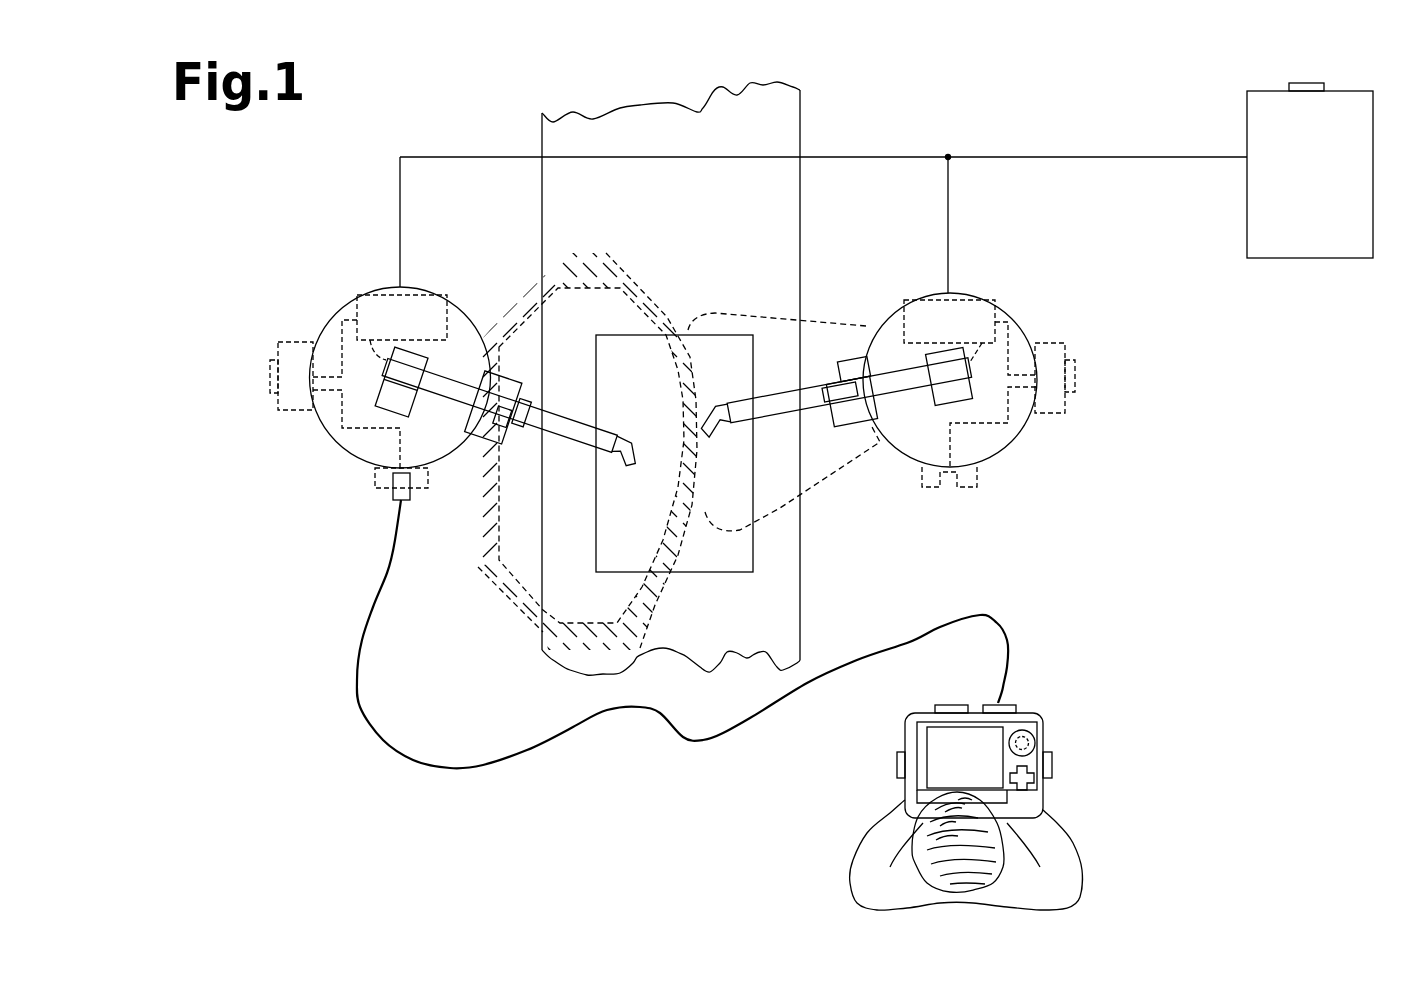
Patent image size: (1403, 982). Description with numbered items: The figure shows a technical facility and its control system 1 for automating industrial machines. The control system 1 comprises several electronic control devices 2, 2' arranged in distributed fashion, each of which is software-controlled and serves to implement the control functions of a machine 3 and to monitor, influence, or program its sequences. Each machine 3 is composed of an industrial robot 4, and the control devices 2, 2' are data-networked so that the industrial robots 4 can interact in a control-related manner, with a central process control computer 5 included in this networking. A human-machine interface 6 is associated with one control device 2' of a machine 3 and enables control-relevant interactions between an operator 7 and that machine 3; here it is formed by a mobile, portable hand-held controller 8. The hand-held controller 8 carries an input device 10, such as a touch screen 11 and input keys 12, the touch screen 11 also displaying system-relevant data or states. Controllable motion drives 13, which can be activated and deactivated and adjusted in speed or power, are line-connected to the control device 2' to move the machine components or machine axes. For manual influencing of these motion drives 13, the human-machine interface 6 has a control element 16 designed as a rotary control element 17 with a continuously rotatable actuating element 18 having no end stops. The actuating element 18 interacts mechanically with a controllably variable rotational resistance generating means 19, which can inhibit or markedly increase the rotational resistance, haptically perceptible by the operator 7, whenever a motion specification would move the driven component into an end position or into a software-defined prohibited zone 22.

The control system 1 is at (297, 217).
The electronic control device 2 is at (974, 721).
The electronic control device 2' is at (644, 284).
The machine 3 is at (345, 457).
The industrial robot 4 is at (442, 450).
The central process control computer 5 is at (1342, 242).
The human-machine interface 6 is at (907, 712).
The operator 7 is at (882, 898).
The hand-held controller 8 is at (907, 743).
The input device 10 is at (930, 770).
The touch screen 11 is at (997, 733).
The input keys 12 is at (1040, 780).
The motion drive 13 is at (388, 405).
The control element 16 is at (1037, 730).
The rotary control element 17 is at (1047, 735).
The actuating element 18 is at (1022, 730).
The rotational resistance generating means 19 is at (1043, 740).
The prohibited zone 22 is at (526, 622).